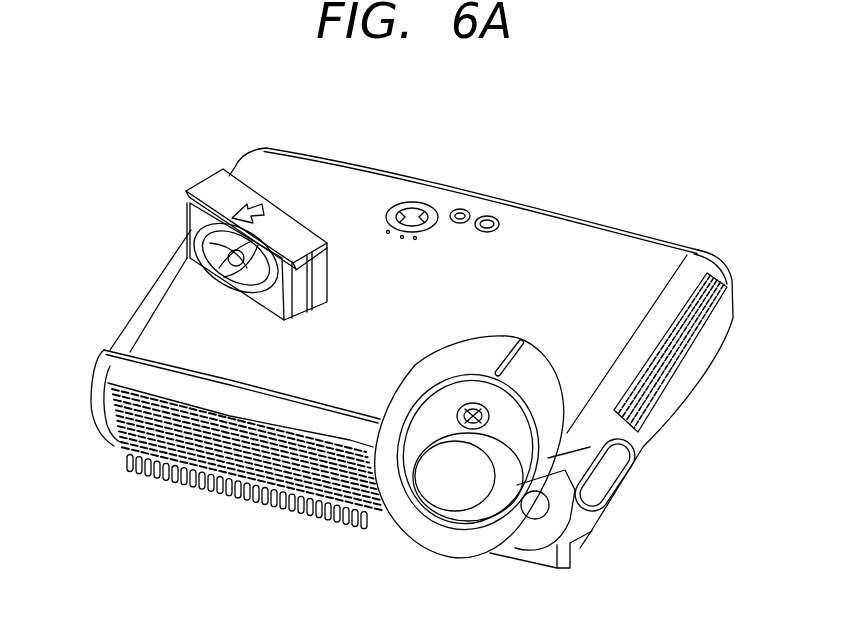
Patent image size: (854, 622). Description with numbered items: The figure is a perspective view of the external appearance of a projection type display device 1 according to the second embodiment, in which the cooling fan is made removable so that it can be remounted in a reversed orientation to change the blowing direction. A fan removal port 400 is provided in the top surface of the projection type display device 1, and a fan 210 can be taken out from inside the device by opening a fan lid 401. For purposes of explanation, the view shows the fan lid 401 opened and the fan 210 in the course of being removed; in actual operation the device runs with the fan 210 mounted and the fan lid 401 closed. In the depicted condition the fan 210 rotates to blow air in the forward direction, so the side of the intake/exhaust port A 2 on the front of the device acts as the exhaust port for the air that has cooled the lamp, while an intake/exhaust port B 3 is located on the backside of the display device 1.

The projection type display device 1 is at (610, 250).
The intake/exhaust port A 2 is at (160, 470).
The intake/exhaust port B 3 is at (363, 168).
The fan 210 is at (223, 286).
The fan removal port 400 is at (308, 296).
The fan lid 401 is at (228, 194).